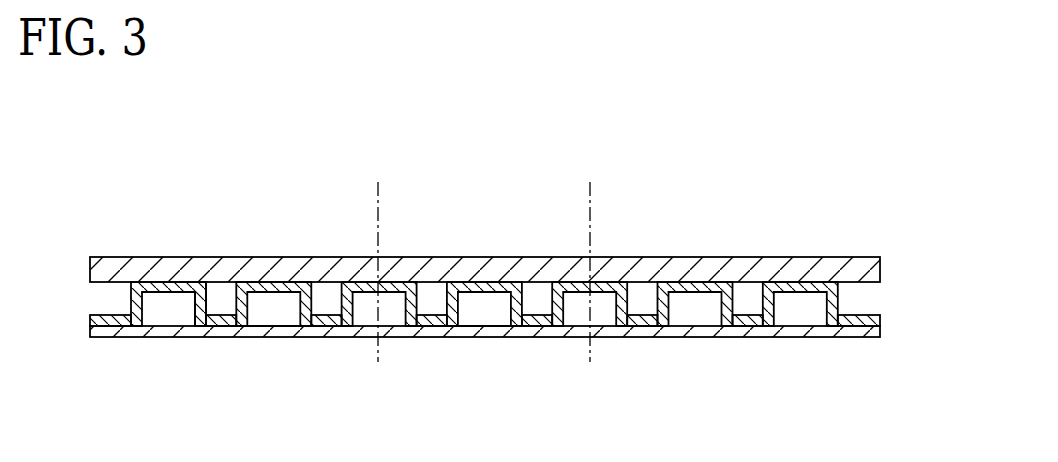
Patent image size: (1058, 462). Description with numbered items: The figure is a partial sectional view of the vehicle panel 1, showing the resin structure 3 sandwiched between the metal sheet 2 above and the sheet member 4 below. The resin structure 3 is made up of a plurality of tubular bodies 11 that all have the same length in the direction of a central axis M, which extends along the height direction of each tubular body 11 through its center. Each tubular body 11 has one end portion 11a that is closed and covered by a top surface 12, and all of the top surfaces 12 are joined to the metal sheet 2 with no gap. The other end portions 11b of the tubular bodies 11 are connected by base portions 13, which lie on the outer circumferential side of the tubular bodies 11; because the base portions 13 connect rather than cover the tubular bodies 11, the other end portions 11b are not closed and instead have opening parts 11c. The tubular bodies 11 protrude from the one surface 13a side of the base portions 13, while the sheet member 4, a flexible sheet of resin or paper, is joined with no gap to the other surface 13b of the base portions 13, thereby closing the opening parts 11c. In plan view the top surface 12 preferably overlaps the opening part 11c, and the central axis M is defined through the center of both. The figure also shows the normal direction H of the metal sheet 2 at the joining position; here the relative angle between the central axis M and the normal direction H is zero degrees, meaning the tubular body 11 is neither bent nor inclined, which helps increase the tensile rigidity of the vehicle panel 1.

The vehicle panel 1 is at (822, 180).
The metal sheet 2 is at (880, 270).
The resin structure 3 is at (486, 310).
The sheet member 4 is at (880, 332).
The tubular body 11 is at (449, 298).
The one end portion 11a is at (232, 281).
The other end portion 11b is at (215, 314).
The opening part 11c is at (248, 318).
The top surface 12 is at (483, 281).
The base portion 13 is at (542, 320).
The one surface 13a is at (100, 316).
The other surface 13b is at (103, 337).
The normal direction H is at (378, 191).
The central axis M is at (378, 352).